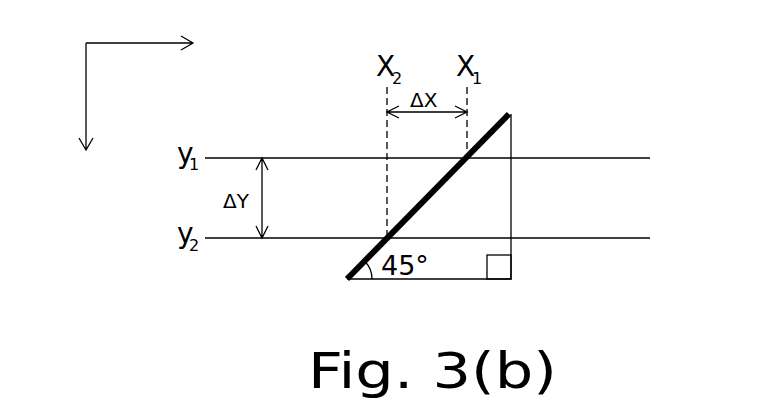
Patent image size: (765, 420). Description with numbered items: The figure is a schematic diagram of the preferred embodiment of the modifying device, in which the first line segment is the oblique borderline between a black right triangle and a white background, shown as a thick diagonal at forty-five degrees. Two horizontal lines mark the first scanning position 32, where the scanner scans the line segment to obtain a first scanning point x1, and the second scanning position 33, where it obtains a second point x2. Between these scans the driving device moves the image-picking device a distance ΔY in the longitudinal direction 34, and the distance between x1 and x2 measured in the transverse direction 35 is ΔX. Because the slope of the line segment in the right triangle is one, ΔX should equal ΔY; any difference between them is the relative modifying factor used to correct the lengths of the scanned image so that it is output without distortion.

The first scanning position 32 is at (446, 158).
The second scanning position 33 is at (446, 238).
The longitudinal direction 34 is at (87, 119).
The transverse direction 35 is at (157, 43).